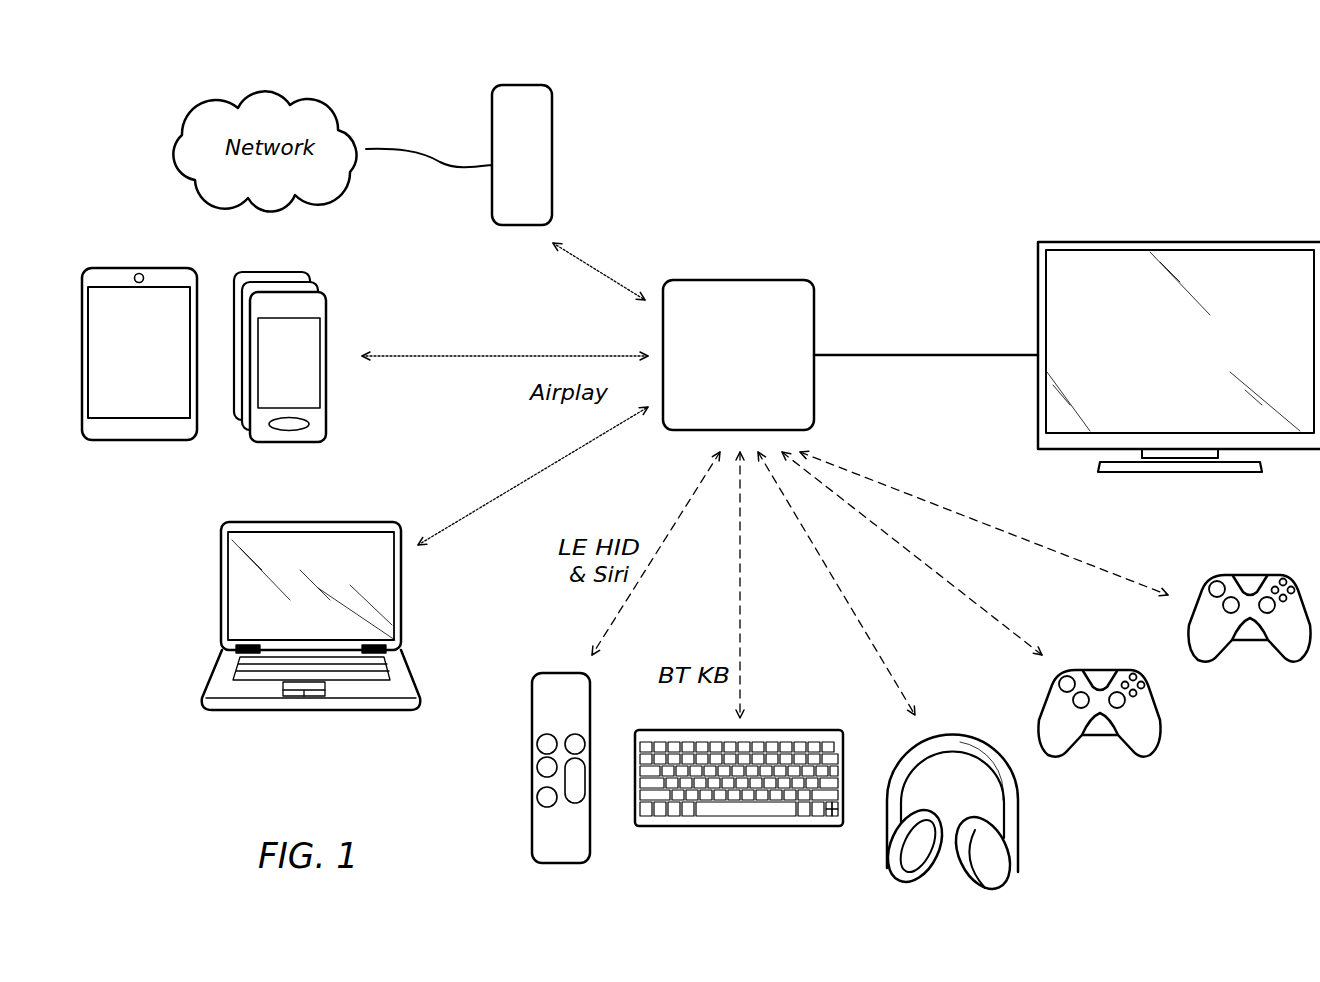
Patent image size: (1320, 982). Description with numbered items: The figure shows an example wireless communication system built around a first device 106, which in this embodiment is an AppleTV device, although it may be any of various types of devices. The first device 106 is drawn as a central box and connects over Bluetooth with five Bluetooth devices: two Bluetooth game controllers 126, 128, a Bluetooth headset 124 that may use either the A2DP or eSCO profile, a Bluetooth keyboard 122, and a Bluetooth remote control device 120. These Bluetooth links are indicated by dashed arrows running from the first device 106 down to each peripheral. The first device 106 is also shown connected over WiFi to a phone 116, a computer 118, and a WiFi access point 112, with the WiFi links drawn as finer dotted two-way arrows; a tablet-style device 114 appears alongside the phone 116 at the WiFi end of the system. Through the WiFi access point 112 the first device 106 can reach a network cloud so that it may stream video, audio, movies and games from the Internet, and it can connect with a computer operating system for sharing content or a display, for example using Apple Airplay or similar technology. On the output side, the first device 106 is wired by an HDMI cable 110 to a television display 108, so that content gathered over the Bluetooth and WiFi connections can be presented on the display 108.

The first device 106 is at (740, 280).
The television / display 108 is at (1186, 242).
The HDMI cable 110 is at (918, 357).
The network router 112 is at (522, 85).
The tablet device 114 is at (136, 441).
The mobile phones 116 is at (290, 443).
The laptop computer 118 is at (308, 712).
The remote control 120 is at (552, 673).
The Bluetooth keyboard 122 is at (742, 827).
The headphones 124 is at (942, 735).
The game controller 126 is at (1095, 737).
The game controller 128 is at (1245, 642).